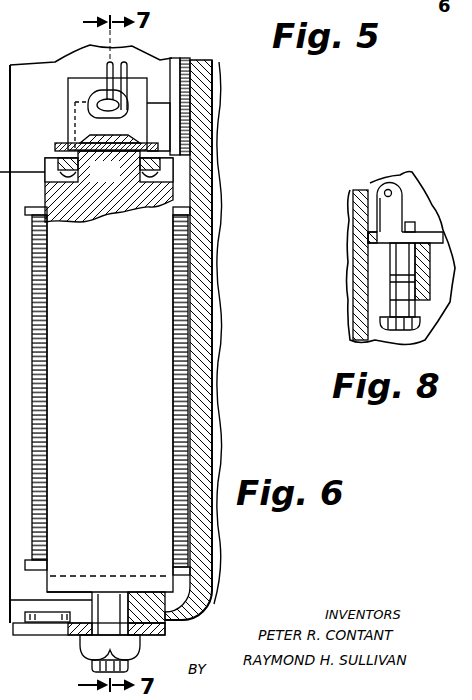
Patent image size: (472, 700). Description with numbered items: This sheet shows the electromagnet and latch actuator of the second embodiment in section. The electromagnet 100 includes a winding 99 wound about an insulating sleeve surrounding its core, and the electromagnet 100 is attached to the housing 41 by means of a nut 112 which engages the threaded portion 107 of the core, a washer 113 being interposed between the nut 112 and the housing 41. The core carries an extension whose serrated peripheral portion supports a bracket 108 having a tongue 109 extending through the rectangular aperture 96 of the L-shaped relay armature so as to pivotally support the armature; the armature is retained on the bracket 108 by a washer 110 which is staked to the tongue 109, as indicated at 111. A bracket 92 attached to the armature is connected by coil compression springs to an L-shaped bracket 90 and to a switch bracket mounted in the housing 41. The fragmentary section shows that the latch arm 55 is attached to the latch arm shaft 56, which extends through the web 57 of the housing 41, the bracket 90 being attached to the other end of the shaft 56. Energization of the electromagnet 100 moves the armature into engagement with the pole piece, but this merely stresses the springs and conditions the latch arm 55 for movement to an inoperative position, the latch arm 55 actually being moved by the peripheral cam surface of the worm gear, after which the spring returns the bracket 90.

In FIG. 6, the housing 41 is at (250, 98).
In FIG. 8, the housing 41 is at (377, 257).
In FIG. 8, the latch arm 55 is at (415, 331).
In FIG. 8, the latch arm shaft 56 is at (390, 283).
In FIG. 8, the web 57 is at (362, 256).
In FIG. 6, the L-shaped bracket 90 is at (184, 68).
In FIG. 8, the L-shaped bracket 90 is at (402, 197).
In FIG. 6, the bracket 92 is at (81, 78).
In FIG. 6, the rectangular aperture 96 is at (109, 186).
In FIG. 6, the winding 99 is at (178, 412).
In FIG. 6, the electromagnet 100 is at (181, 372).
In FIG. 6, the threaded portion 107 is at (90, 666).
In FIG. 6, the bracket 108 is at (157, 290).
In FIG. 6, the tongue 109 is at (172, 163).
In FIG. 6, the washer 110 is at (64, 144).
In FIG. 6, the staking 111 is at (88, 134).
In FIG. 6, the nut 112 is at (78, 644).
In FIG. 6, the washer 113 is at (165, 629).